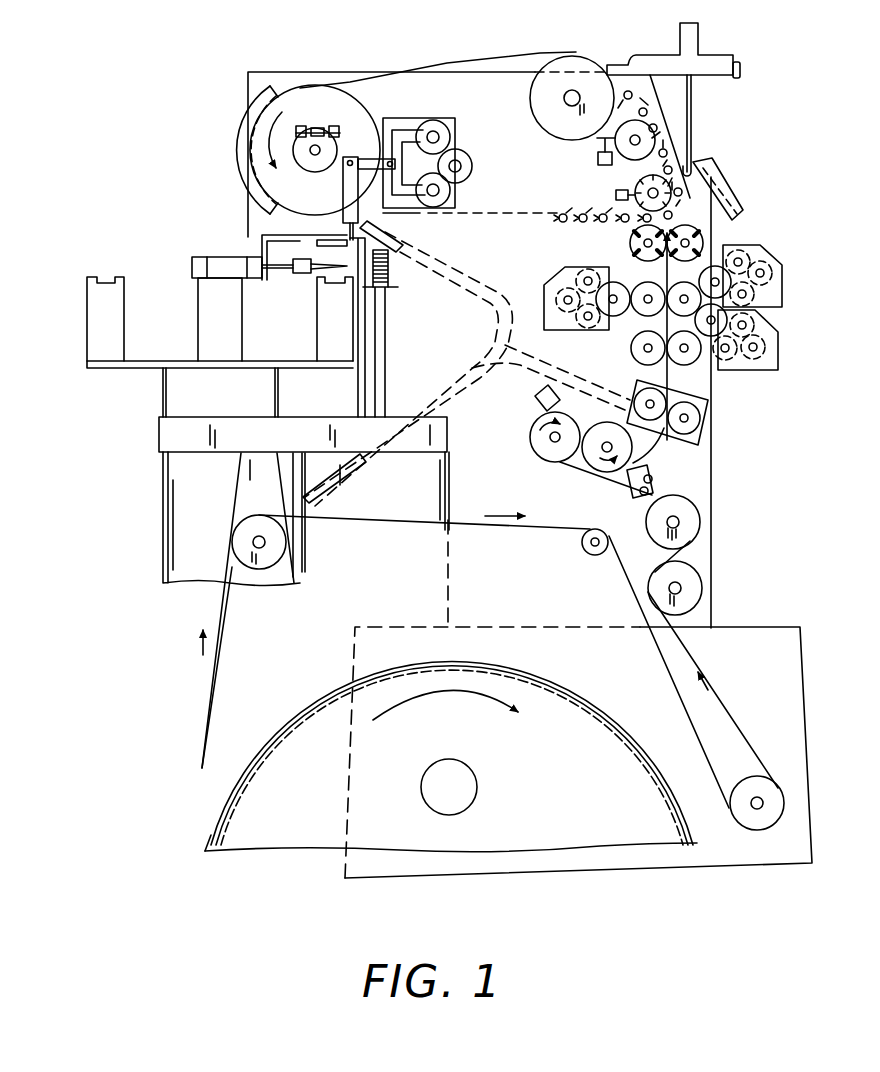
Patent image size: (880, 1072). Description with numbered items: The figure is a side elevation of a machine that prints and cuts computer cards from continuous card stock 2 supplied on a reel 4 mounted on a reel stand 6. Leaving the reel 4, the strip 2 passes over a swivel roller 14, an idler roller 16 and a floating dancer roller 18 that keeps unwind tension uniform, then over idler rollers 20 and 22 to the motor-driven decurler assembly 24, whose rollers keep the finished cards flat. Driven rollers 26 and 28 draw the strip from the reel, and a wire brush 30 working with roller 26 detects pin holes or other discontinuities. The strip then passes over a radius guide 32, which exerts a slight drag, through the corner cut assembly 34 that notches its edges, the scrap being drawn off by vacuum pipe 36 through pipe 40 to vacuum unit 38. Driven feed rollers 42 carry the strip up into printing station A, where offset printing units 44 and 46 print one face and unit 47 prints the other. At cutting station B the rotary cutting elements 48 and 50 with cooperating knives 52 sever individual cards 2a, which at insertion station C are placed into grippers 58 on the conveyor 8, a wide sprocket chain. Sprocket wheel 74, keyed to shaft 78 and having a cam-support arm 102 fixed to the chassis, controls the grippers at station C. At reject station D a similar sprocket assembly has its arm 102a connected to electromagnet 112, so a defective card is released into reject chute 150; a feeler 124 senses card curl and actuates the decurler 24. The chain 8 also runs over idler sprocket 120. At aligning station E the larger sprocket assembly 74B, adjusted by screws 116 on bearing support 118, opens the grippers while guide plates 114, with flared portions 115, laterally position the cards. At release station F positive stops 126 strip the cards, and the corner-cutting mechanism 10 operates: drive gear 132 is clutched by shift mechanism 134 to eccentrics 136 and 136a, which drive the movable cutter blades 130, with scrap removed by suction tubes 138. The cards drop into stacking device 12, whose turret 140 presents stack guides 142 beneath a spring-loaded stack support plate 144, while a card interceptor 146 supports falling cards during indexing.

The card stock 2 is at (573, 472).
The individual card 2a is at (678, 223).
The reel 4 is at (232, 773).
The reel stand 6 is at (460, 782).
The conveyor 8 is at (493, 66).
The corner-cutting mechanism 10 is at (420, 118).
The stacking device 12 is at (82, 328).
The swivel roller 14 is at (273, 543).
The idler roller 16 is at (597, 529).
The dancer roller 18 is at (760, 818).
The idler roller 20 is at (693, 582).
The idler roller 22 is at (699, 520).
The decurler assembly 24 is at (657, 478).
The driven roller 26 is at (543, 450).
The driven roller 28 is at (606, 423).
The wire brush 30 is at (557, 403).
The radius guide 32 is at (652, 448).
The corner cut assembly 34 is at (707, 427).
The vacuum pipe 36 is at (592, 376).
The vacuum unit 38 is at (175, 547).
The pipe 40 is at (437, 388).
The driven feed rollers 42 is at (641, 361).
The offset printing unit 44 is at (780, 360).
The offset printing unit 46 is at (780, 280).
The offset printing unit 47 is at (562, 275).
The rotary cutting element 48 is at (638, 256).
The rotary cutting element 50 is at (676, 259).
The knives 52 is at (657, 259).
The article-grippers 58 is at (599, 227).
The sprocket wheel 74 is at (622, 103).
The sprocket assembly 74B is at (376, 116).
The shaft 78 is at (313, 152).
The arm 102 is at (319, 128).
The arm 102a is at (597, 143).
The electromagnet 112 is at (605, 164).
The guide plates 114 is at (258, 115).
The flared portion 115 is at (284, 88).
The adjusting screws 116 is at (300, 126).
The bearing support 118 is at (324, 172).
The idler sprocket 120 is at (552, 113).
The feeler 124 is at (693, 142).
The positive stops 126 is at (338, 233).
The movable cutter blade 130 is at (355, 188).
The drive gear 132 is at (468, 168).
The shift mechanism 134 is at (398, 171).
The eccentric 136 is at (443, 131).
The eccentric 136a is at (443, 197).
The suction tubes 138 is at (395, 258).
The turret 140 is at (135, 372).
The stack guide 142 is at (300, 327).
The stack support plate 144 is at (345, 243).
The card interceptor 146 is at (312, 275).
The reject chute 150 is at (733, 200).
The printing station A is at (787, 312).
The cutting station B is at (714, 239).
The insertion station C is at (660, 205).
The reject station D is at (674, 122).
The aligning station E is at (234, 142).
The release station F is at (344, 221).